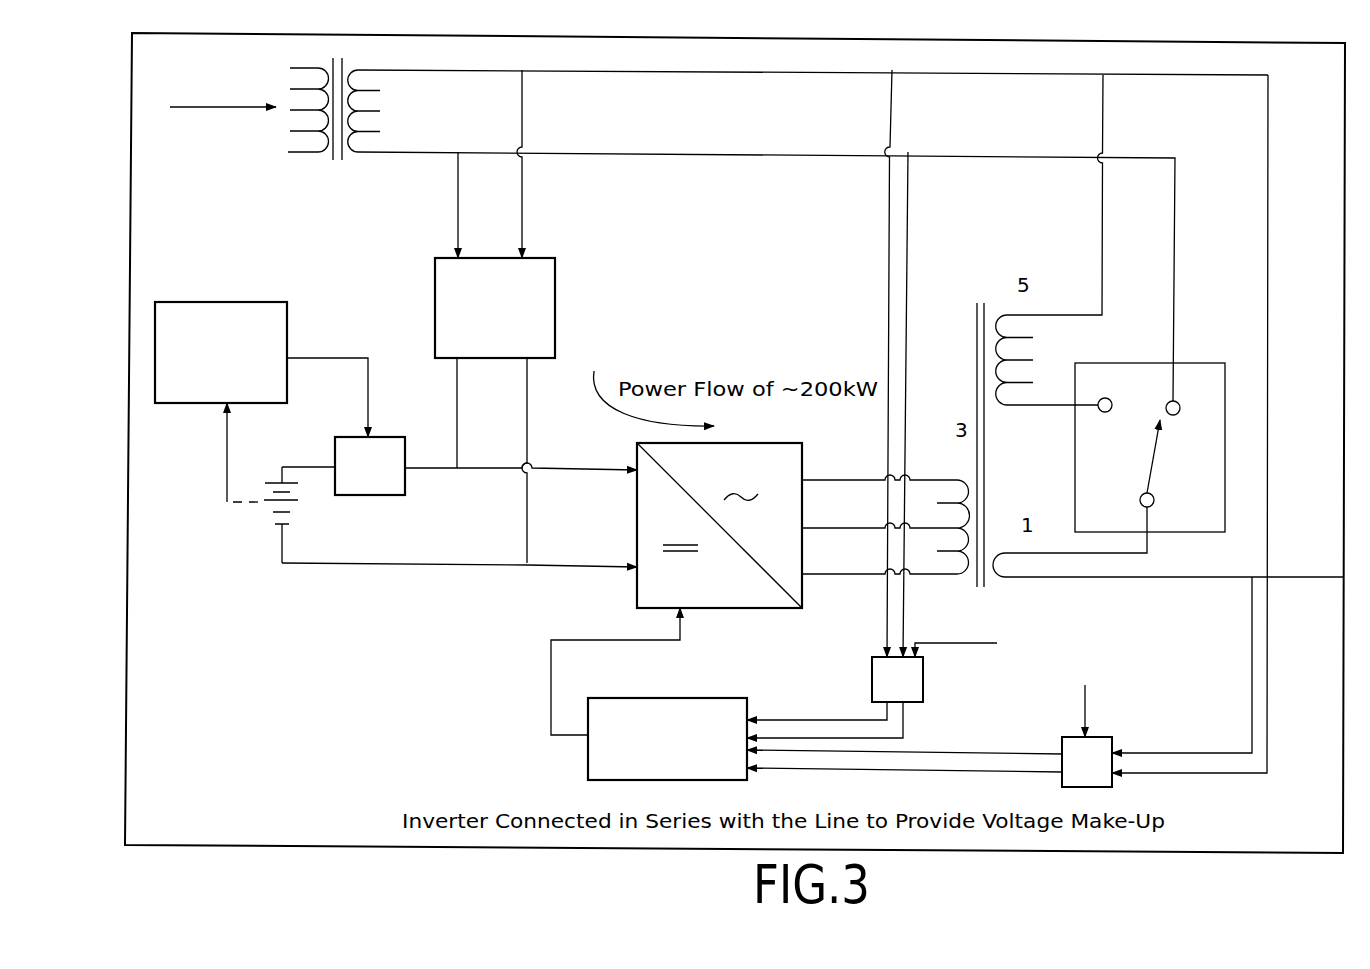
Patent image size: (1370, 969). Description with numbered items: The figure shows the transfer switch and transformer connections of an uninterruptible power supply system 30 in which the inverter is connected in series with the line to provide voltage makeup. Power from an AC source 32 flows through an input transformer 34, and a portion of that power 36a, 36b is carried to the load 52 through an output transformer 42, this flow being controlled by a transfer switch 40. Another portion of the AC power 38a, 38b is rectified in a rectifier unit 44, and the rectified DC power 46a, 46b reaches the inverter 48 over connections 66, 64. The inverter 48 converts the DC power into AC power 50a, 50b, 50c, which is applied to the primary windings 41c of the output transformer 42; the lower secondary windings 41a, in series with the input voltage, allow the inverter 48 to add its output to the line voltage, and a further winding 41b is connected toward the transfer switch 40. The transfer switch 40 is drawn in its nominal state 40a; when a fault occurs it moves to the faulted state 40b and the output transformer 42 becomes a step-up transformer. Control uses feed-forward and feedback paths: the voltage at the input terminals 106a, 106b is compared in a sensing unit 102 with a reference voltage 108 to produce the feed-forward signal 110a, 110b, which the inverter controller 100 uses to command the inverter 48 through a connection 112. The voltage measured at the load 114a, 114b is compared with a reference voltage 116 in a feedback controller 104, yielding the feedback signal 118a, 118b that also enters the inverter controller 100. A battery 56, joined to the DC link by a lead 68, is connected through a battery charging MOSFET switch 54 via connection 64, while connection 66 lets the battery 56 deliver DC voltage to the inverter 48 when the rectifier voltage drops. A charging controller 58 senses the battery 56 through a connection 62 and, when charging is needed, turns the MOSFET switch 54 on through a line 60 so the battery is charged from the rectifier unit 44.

The system 30 is at (301, 35).
The AC source 32 is at (216, 107).
The input transformer 34 is at (338, 57).
The line power 36a is at (806, 72).
The line power 36b is at (785, 153).
The AC power to rectifier 38a is at (522, 183).
The AC power to rectifier 38b is at (458, 186).
The transfer switch 40 is at (1182, 493).
The nominal state 40a is at (1176, 415).
The faulted state 40b is at (1102, 412).
The lower secondary windings 41a is at (1030, 584).
The transformer winding 41b is at (1033, 353).
The primary windings 41c is at (949, 478).
The output transformer 42 is at (966, 322).
The rectifier unit 44 is at (546, 259).
The rectified DC power 46a is at (528, 423).
The rectified DC power 46b is at (457, 390).
The inverter 48 is at (758, 443).
The AC output power 50a is at (856, 480).
The AC output power 50b is at (856, 574).
The AC output power 50c is at (856, 528).
The load 52 is at (1283, 577).
The battery charging MOSFET switch 54 is at (365, 495).
The battery 56 is at (262, 511).
The charging controller 58 is at (233, 302).
The line 60 is at (322, 358).
The connection 62 is at (222, 455).
The connection 64 is at (435, 470).
The connection 66 is at (548, 566).
The battery lead 68 is at (310, 466).
The inverter controller 100 is at (680, 698).
The feed-forward controller 102 is at (923, 680).
The feedback controller 104 is at (1076, 737).
The input terminal 106a is at (891, 230).
The input terminal 106b is at (907, 190).
The reference voltage 108 is at (944, 643).
The feed-forward signal 110a is at (857, 720).
The feed-forward signal 110b is at (905, 732).
The inverter connection 112 is at (551, 658).
The load voltage measurement 114a is at (1267, 697).
The load voltage measurement 114b is at (1250, 642).
The reference voltage 116 is at (1085, 702).
The feedback signal 118a is at (940, 770).
The feedback signal 118b is at (958, 752).